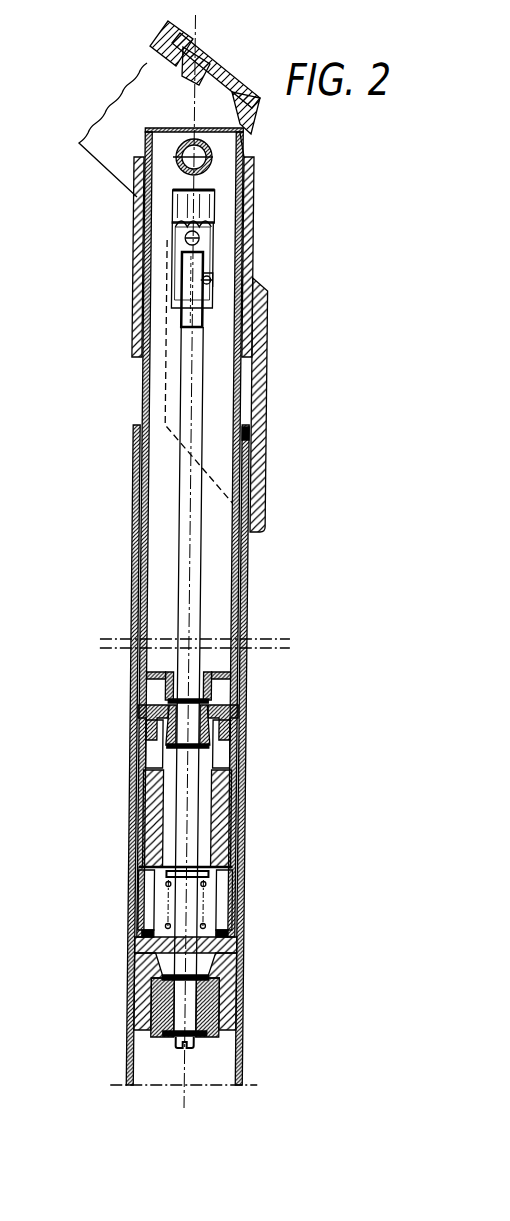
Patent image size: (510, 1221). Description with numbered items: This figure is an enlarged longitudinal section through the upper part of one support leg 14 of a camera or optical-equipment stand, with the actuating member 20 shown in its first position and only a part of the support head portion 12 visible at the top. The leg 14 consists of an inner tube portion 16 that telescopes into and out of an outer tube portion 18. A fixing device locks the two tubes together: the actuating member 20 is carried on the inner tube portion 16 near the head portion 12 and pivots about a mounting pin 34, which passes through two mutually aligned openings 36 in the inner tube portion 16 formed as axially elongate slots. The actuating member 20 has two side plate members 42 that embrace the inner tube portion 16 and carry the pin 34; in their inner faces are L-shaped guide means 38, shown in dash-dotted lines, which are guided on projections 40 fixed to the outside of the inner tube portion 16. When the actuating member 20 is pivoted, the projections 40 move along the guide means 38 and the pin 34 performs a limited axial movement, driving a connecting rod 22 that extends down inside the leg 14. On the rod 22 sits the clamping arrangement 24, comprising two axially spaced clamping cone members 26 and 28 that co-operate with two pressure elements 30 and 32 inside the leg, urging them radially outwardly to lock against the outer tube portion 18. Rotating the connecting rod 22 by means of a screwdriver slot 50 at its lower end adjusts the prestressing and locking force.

The support head portion 12 is at (228, 62).
The support leg 14 is at (253, 725).
The inner tube portion 16 is at (237, 556).
The outer tube portion 18 is at (244, 590).
The actuating member 20 is at (270, 352).
The connecting rod 22 is at (197, 510).
The clamping arrangement 24 is at (125, 874).
The clamping cone member 26 is at (165, 1005).
The clamping cone member 28 is at (168, 728).
The pressure element 30 is at (223, 985).
The pressure element 32 is at (212, 748).
The mounting pin 34 is at (203, 240).
The openings 36 is at (182, 252).
The guide means 38 is at (203, 279).
The projections 40 is at (208, 280).
The side plate members 42 is at (212, 420).
The screwdriver slot 50 is at (183, 1058).